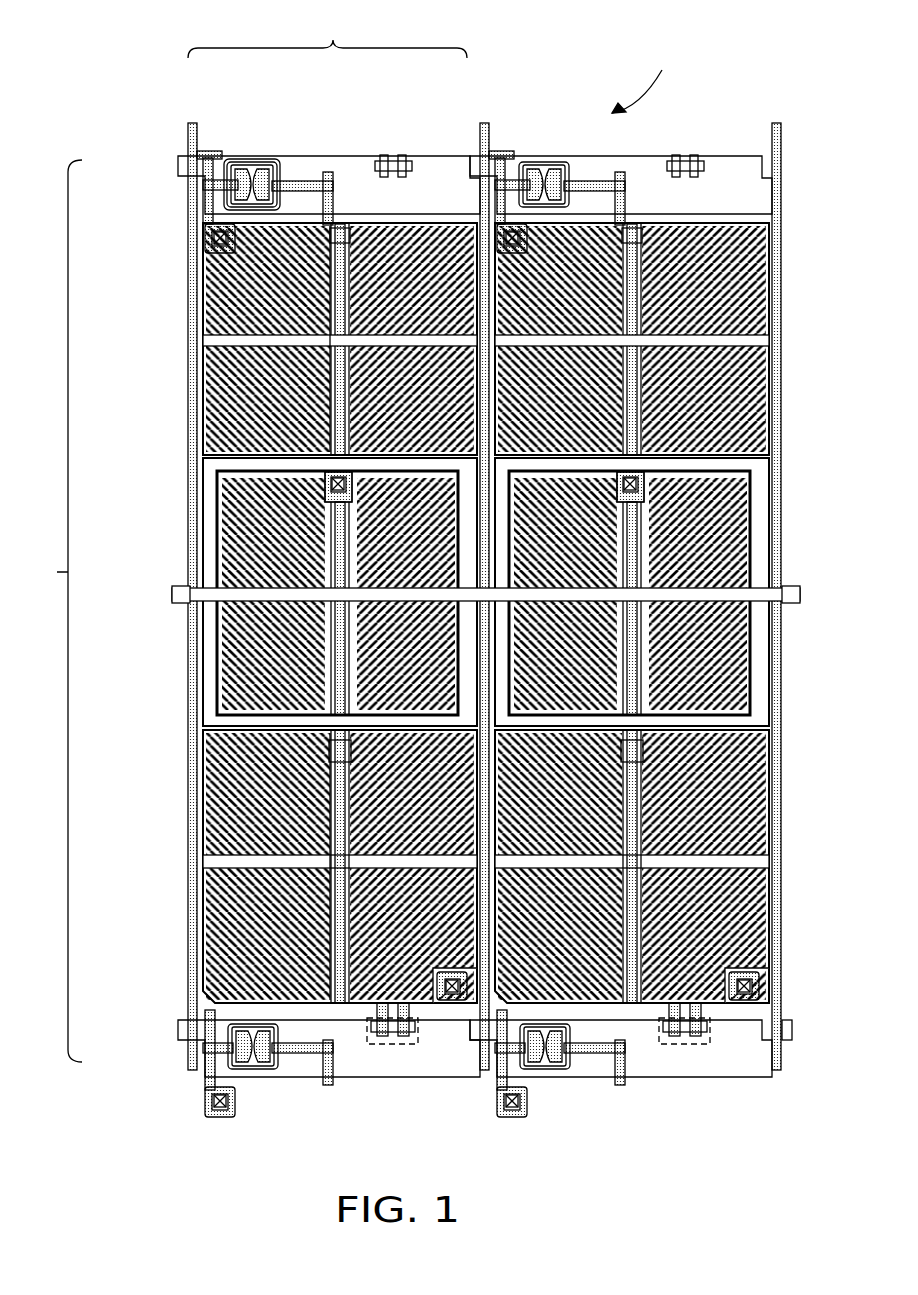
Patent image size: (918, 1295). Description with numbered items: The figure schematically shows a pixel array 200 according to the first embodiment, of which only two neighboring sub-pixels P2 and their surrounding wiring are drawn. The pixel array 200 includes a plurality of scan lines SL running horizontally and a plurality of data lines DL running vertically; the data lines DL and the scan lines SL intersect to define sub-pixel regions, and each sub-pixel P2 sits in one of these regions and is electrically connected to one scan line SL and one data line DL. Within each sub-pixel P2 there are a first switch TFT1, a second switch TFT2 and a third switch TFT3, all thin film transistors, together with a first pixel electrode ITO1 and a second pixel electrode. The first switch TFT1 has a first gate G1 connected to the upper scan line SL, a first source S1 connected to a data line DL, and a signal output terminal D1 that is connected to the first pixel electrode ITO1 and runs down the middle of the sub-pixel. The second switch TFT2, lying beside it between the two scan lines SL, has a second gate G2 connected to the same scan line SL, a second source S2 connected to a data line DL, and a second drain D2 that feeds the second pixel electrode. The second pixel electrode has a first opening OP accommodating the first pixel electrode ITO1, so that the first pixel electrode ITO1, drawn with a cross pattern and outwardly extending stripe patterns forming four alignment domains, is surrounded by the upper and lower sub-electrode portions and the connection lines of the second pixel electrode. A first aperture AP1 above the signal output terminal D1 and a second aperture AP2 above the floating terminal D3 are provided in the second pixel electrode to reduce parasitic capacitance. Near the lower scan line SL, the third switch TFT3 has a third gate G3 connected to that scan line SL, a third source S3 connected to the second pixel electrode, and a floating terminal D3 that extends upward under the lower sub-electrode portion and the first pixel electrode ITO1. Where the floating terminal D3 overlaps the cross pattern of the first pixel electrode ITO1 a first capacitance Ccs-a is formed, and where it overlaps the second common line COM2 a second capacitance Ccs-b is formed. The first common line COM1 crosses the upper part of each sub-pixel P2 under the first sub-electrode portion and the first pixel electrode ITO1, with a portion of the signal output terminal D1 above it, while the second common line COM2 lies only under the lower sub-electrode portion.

The data lines DL is at (327, 34).
The scan lines SL is at (51, 611).
The sub-pixel P2 is at (645, 78).
The first switch TFT1 is at (280, 160).
The second switch TFT2 is at (237, 158).
The third switch TFT3 is at (405, 1046).
The first source S1 is at (268, 165).
The second source S2 is at (197, 156).
The third source S3 is at (433, 1007).
The first gate G1 is at (279, 169).
The second gate G2 is at (205, 186).
The third gate G3 is at (377, 1045).
The signal output terminal D1 is at (340, 224).
The second drain D2 is at (208, 238).
The floating terminal D3 is at (337, 1005).
The first common line COM1 is at (210, 340).
The second common line COM2 is at (205, 861).
The first aperture AP1 is at (325, 378).
The second aperture AP2 is at (325, 903).
The first pixel electrode ITO1 is at (222, 622).
The first opening OP is at (212, 552).
The first capacitance Ccs-a is at (305, 711).
The second capacitance Ccs-b is at (250, 975).
The pixel array 200 is at (723, 1136).